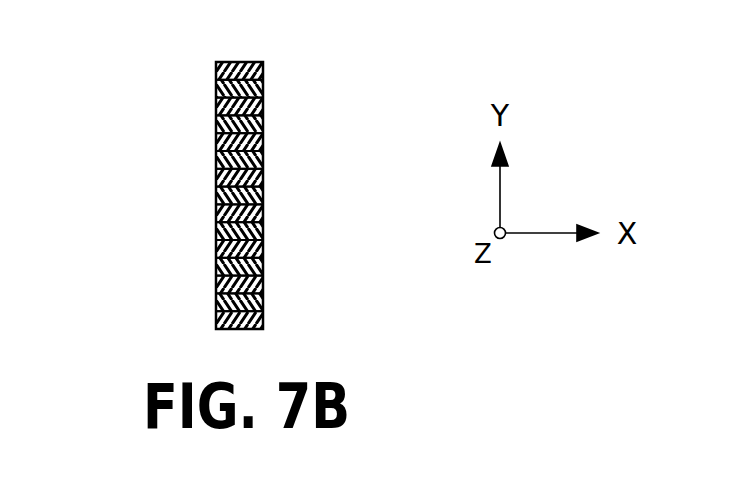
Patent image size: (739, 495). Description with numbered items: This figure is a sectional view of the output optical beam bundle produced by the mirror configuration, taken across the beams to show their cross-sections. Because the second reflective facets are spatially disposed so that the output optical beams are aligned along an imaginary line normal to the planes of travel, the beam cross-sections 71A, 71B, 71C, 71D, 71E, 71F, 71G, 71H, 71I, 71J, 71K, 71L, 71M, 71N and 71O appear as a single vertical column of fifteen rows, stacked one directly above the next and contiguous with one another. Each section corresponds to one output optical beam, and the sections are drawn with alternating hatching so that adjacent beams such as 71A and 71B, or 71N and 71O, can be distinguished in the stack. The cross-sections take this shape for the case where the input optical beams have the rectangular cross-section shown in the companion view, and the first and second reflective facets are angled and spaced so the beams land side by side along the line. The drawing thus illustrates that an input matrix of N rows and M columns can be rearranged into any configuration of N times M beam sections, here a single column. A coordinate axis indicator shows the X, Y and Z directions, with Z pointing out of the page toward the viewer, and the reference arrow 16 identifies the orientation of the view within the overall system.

The optical element 16 is at (574, 124).
The cross-section of output optical beam 71A is at (216, 71).
The cross-section of output optical beam 71B is at (264, 90).
The cross-section of output optical beam 71C is at (216, 106).
The cross-section of output optical beam 71D is at (264, 125).
The cross-section of output optical beam 71E is at (216, 142).
The cross-section of output optical beam 71F is at (264, 161).
The cross-section of output optical beam 71G is at (216, 178).
The cross-section of output optical beam 71H is at (264, 196).
The cross-section of output optical beam 71I is at (216, 213).
The cross-section of output optical beam 71J is at (264, 232).
The cross-section of output optical beam 71K is at (216, 249).
The cross-section of output optical beam 71L is at (264, 267).
The cross-section of output optical beam 71M is at (216, 284).
The cross-section of output optical beam 71N is at (264, 302).
The cross-section of output optical beam 71O is at (216, 320).